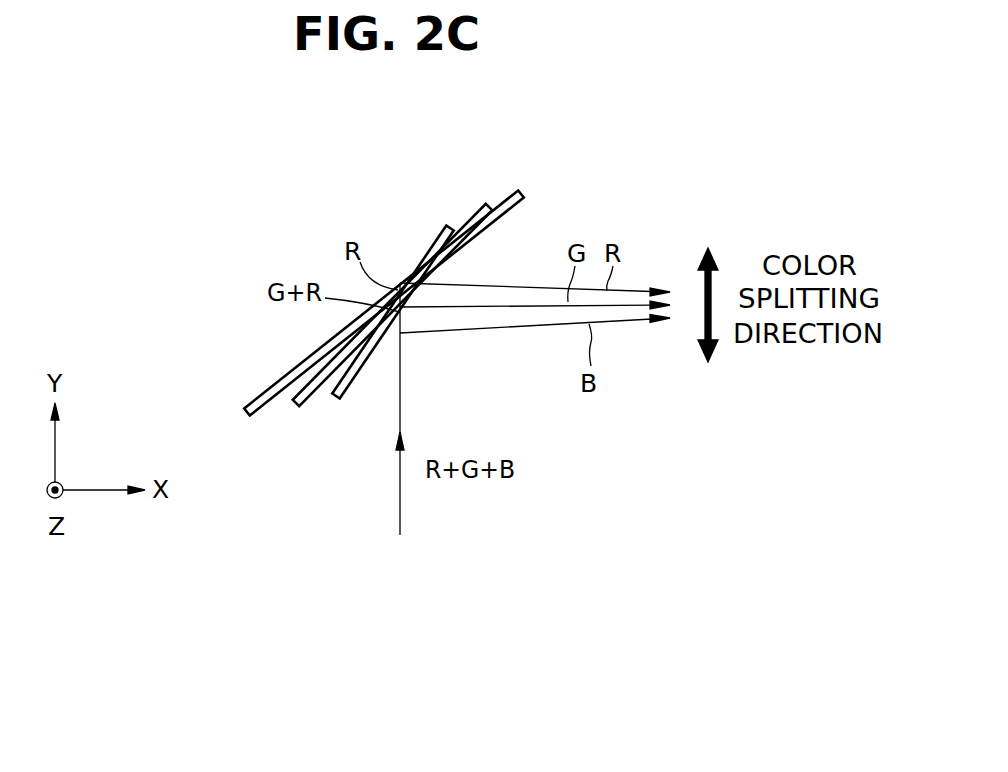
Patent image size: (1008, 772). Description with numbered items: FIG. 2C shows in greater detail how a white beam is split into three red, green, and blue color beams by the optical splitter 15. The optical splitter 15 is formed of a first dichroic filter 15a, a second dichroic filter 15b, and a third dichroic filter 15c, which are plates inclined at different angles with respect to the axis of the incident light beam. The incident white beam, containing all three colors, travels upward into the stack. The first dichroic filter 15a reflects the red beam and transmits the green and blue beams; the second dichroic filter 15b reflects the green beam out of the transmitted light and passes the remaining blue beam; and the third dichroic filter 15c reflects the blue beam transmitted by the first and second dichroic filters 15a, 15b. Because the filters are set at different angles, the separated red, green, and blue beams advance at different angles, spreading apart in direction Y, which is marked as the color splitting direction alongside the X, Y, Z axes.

The optical splitter 15 is at (372, 365).
The first dichroic filter 15a is at (389, 355).
The second dichroic filter 15b is at (296, 407).
The third dichroic filter 15c is at (247, 416).